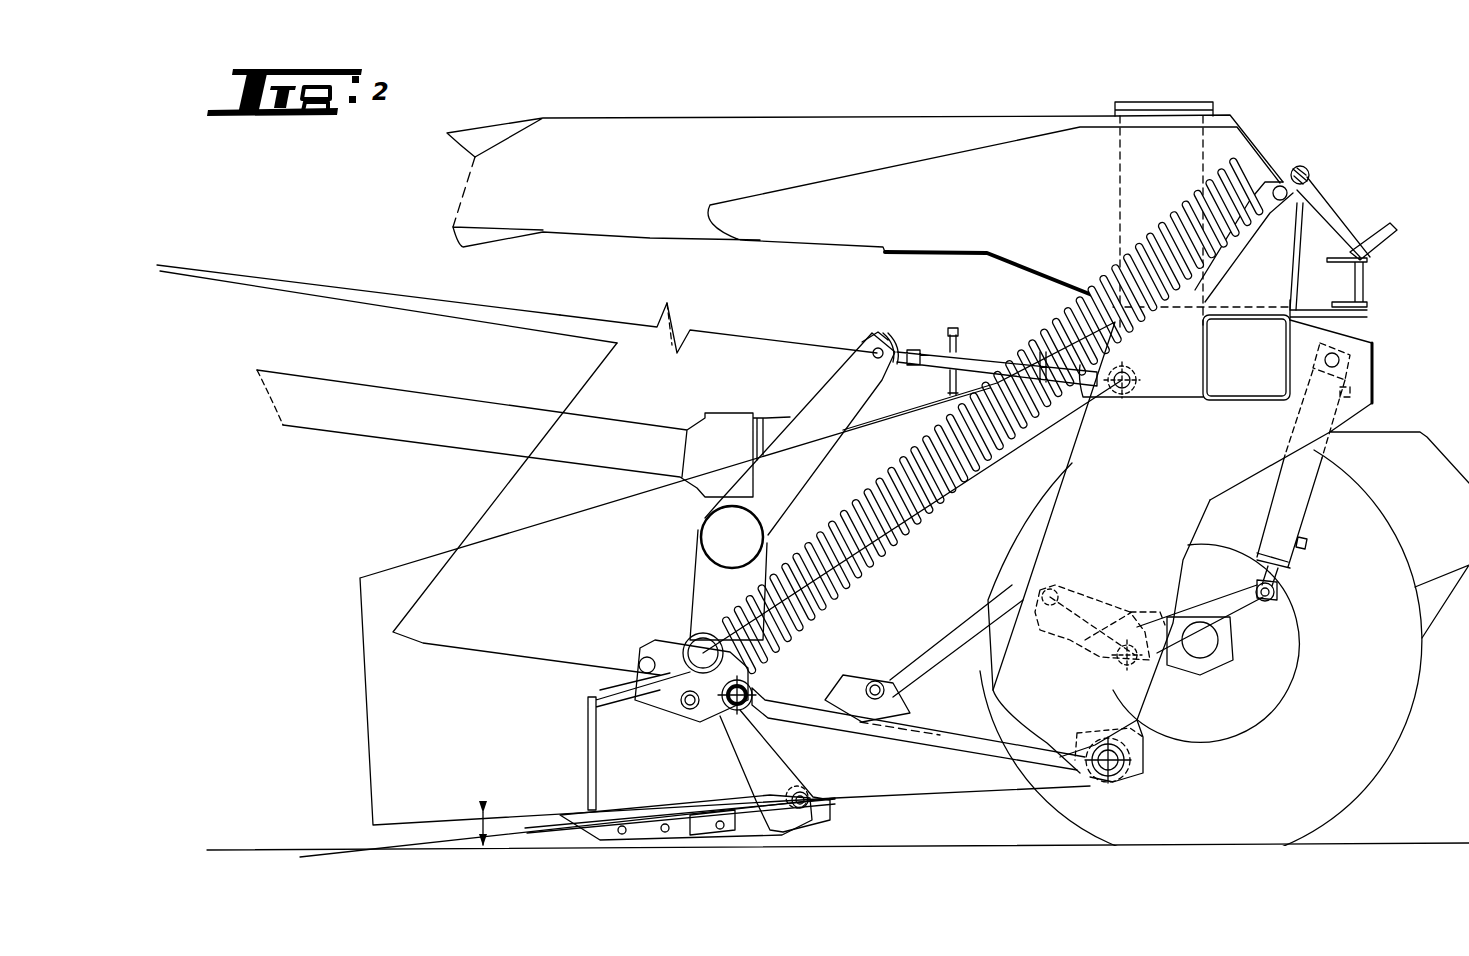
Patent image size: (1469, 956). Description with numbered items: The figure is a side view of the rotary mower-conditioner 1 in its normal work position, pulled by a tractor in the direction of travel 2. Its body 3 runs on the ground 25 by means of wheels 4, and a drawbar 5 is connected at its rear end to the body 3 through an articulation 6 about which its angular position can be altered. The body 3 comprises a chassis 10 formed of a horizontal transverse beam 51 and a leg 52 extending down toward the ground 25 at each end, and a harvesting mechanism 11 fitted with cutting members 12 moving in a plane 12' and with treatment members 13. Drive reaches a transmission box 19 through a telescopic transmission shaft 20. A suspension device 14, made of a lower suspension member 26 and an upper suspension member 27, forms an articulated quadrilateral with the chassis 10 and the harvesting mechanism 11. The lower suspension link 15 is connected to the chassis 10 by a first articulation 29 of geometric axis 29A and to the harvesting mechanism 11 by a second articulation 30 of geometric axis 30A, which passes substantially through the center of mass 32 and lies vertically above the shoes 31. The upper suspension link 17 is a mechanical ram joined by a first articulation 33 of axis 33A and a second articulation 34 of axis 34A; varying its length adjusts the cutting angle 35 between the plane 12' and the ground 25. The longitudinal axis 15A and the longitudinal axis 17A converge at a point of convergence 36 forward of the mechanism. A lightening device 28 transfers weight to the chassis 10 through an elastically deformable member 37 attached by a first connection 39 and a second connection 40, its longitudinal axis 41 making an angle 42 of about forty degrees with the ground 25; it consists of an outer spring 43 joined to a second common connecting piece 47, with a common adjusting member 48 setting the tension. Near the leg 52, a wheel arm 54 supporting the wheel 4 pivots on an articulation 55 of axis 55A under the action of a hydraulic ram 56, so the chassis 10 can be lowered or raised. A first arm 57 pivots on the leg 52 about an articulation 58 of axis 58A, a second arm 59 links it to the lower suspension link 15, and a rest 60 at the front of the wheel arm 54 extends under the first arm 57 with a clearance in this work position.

The rotary mower-conditioner 1 is at (325, 520).
The direction of travel 2 is at (487, 77).
The body 3 is at (405, 562).
The wheel 4 is at (1393, 715).
The drawbar 5 is at (818, 113).
The articulation 6 is at (1180, 100).
The chassis 10 is at (1295, 340).
The harvesting mechanism 11 is at (587, 707).
The cutting member 12 is at (679, 797).
The plane of movement of the cutting members 12' is at (434, 799).
The treatment member 13 is at (898, 653).
The suspension device 14 is at (950, 712).
The lower suspension link 15 is at (998, 748).
The longitudinal axis of the lower suspension link 15A is at (423, 643).
The upper suspension link 17 is at (1040, 360).
The longitudinal axis of the upper suspension link 17A is at (587, 320).
The transmission box 19 is at (757, 418).
The telescopic transmission shaft 20 is at (433, 400).
The ground 25 is at (1394, 843).
The lower suspension member 26 is at (918, 748).
The upper suspension member 27 is at (983, 345).
The lightening device 28 is at (1100, 290).
The first articulation 29 is at (1127, 787).
The geometric axis of the first articulation 29A is at (1113, 773).
The second articulation 30 is at (740, 712).
The geometric axis of the second articulation 30A is at (733, 705).
The shoe 31 is at (725, 847).
The center of mass 32 is at (690, 645).
The first articulation 33 is at (1135, 398).
The geometric axis of the first articulation 33A is at (1115, 402).
The second articulation 34 is at (890, 338).
The geometric axis of the second articulation 34A is at (872, 350).
The cutting angle 35 is at (483, 847).
The point of convergence 36 is at (215, 275).
The elastically deformable member 37 is at (1160, 250).
The first connection 39 is at (1280, 185).
The second connection 40 is at (677, 697).
The longitudinal axis of the elastically deformable member 41 is at (1313, 155).
The angle 42 is at (650, 835).
The outer spring 43 is at (940, 527).
The second common connecting piece 47 is at (700, 593).
The common adjusting member 48 is at (1318, 193).
The beam 51 is at (1250, 405).
The leg 52 is at (1050, 517).
The wheel arm 54 is at (1243, 612).
The articulation 55 is at (1150, 687).
The geometric axis of the articulation 55A is at (1148, 657).
The hydraulic ram 56 is at (1307, 488).
The first arm 57 is at (1108, 605).
The articulation 58 is at (1143, 630).
The geometric axis of the articulation 58A is at (1145, 652).
The second arm 59 is at (928, 658).
The rest 60 is at (1052, 660).